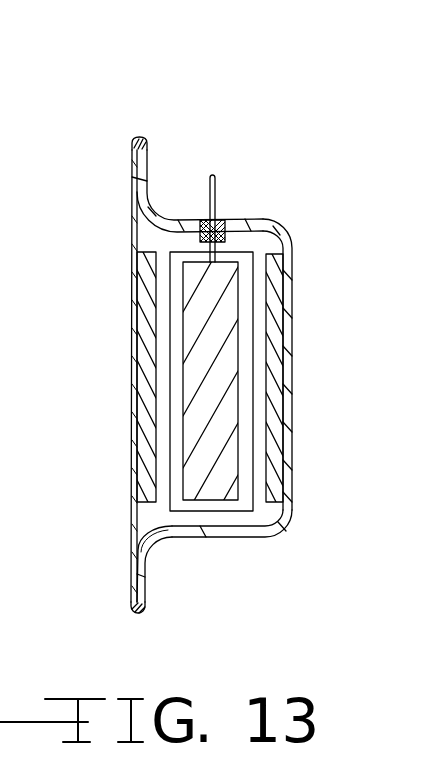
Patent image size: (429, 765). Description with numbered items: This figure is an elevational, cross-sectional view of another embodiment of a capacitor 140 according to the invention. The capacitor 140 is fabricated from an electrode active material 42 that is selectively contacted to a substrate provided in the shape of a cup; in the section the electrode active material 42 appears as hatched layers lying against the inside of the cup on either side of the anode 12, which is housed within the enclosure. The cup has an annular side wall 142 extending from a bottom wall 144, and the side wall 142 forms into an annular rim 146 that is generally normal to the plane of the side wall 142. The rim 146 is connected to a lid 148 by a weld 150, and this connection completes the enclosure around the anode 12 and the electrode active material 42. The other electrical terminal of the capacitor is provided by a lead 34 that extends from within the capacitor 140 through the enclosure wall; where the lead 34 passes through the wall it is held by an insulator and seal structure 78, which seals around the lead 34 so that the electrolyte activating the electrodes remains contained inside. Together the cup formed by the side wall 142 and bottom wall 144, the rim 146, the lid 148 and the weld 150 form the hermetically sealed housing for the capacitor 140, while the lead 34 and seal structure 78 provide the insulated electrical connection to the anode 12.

The anode 12 is at (240, 395).
The lead 34 is at (216, 186).
The electrode active material 42 is at (147, 417).
The insulator and seal structure 78 is at (232, 238).
The capacitor 140 is at (332, 224).
The side wall 142 is at (213, 535).
The bottom wall 144 is at (292, 338).
The rim 146 is at (147, 587).
The lid 148 is at (132, 315).
The weld 150 is at (137, 134).